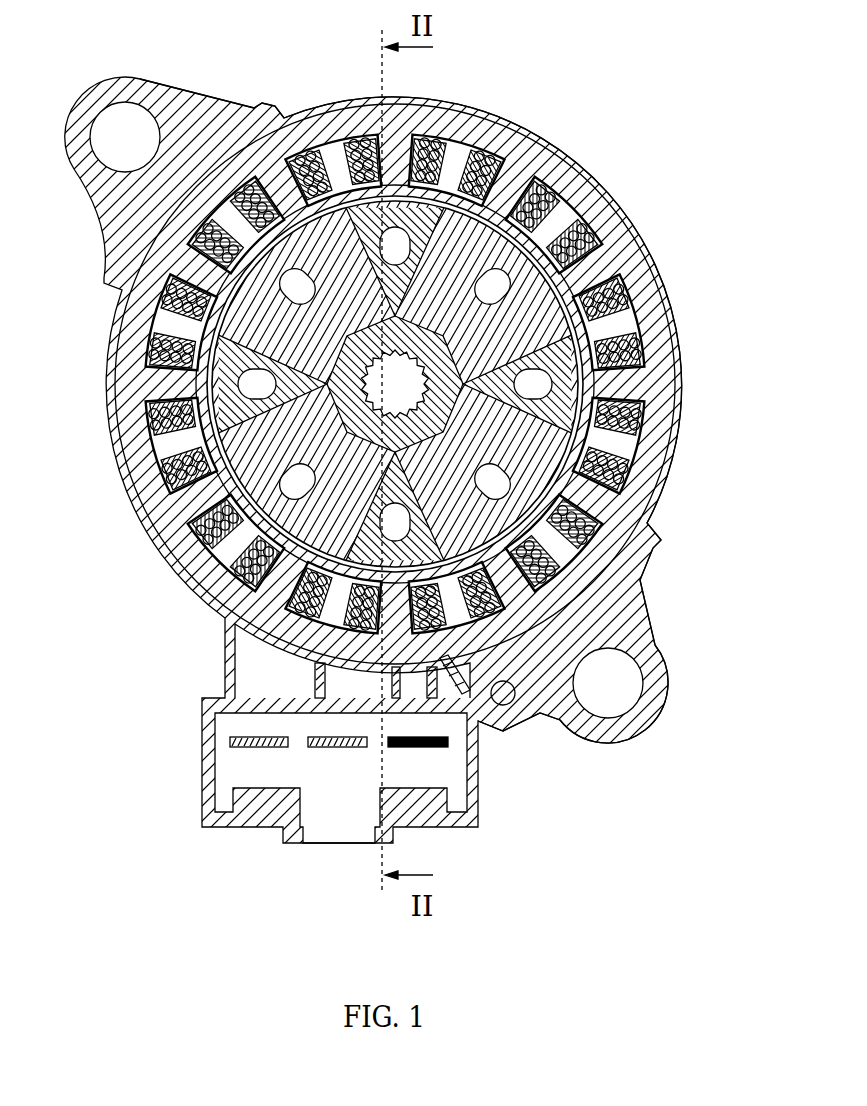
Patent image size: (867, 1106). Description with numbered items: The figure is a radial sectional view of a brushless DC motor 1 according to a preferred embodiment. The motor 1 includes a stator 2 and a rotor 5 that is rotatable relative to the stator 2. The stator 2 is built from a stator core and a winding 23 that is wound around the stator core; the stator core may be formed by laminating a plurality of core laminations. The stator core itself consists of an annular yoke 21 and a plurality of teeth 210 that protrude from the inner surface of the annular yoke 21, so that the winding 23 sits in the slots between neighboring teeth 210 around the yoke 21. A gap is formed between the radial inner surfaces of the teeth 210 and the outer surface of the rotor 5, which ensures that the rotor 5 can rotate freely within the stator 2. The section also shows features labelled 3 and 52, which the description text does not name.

The brushless DC motor 1 is at (493, 75).
The stator 2 is at (550, 180).
The annular yoke 21 is at (240, 497).
The teeth 210 is at (243, 500).
The winding 23 is at (655, 490).
The rotor 3 is at (230, 430).
The rotor 5 is at (537, 277).
The magnetic pole portion 52 is at (543, 326).